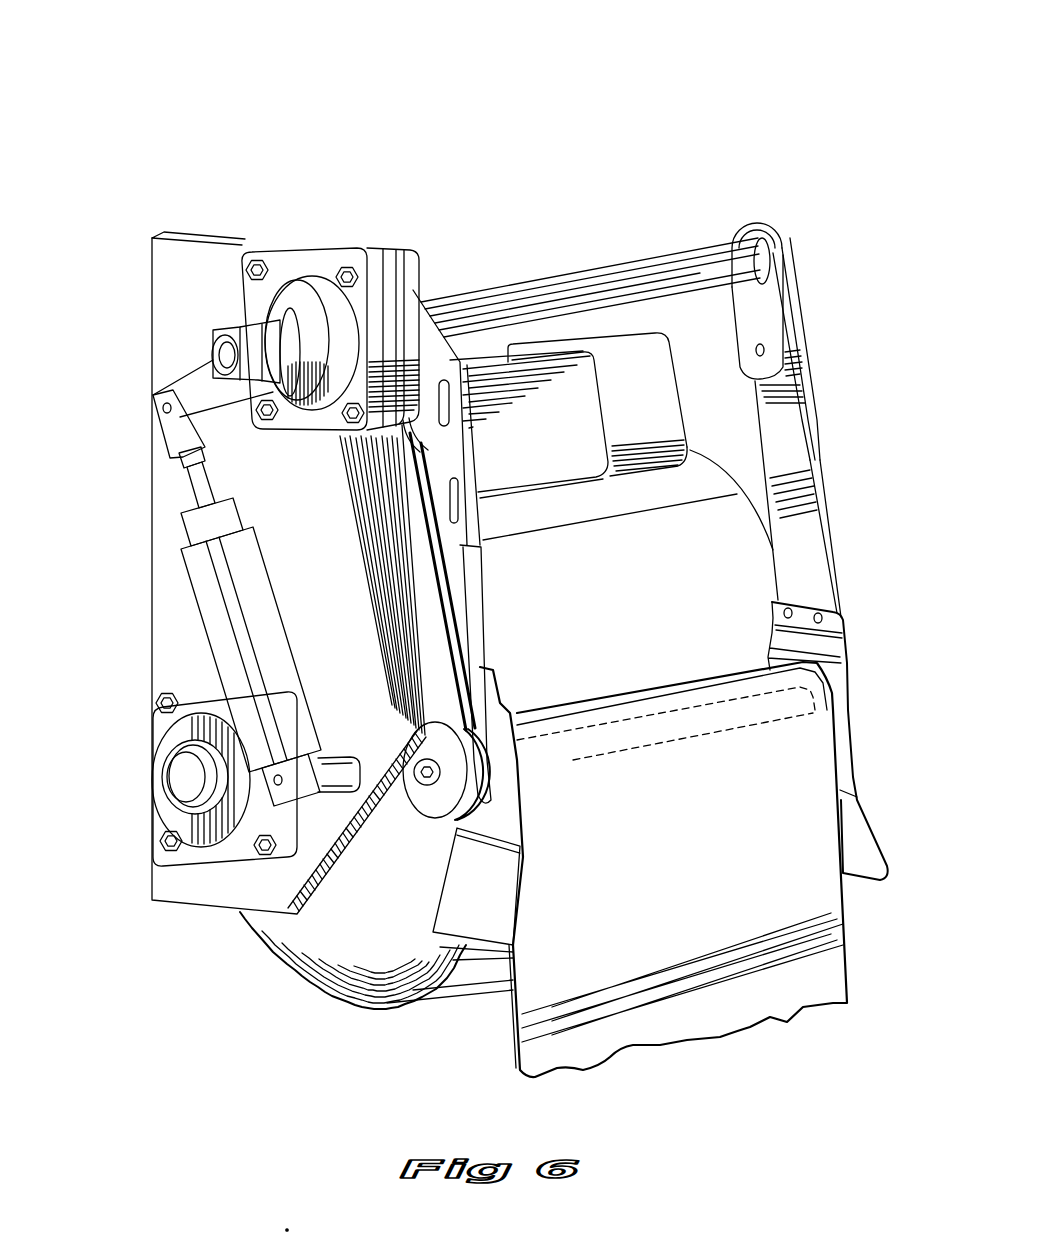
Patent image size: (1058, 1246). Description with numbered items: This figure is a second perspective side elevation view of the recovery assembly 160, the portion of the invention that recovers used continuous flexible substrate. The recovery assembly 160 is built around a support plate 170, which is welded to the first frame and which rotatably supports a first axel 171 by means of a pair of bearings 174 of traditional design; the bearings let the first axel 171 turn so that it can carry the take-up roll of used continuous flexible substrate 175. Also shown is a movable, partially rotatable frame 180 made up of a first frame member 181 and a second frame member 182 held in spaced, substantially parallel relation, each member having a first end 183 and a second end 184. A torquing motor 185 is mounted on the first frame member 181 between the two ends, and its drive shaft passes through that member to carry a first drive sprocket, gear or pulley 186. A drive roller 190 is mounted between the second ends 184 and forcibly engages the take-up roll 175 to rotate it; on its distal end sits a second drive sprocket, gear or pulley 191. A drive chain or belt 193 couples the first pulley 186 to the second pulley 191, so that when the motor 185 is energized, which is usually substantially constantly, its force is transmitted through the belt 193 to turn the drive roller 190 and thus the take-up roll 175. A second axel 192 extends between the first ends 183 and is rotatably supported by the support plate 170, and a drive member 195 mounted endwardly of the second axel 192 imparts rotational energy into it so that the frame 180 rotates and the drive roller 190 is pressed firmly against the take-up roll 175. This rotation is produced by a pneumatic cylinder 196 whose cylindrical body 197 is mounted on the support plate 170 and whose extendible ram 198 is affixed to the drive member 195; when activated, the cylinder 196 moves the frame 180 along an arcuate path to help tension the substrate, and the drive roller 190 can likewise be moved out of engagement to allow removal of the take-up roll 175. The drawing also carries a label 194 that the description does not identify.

The recovery assembly 160 is at (363, 108).
The support plate 170 is at (152, 306).
The first axel 171 is at (175, 782).
The bearings 174 is at (180, 823).
The take-up roll of used continuous flexible substrate 175 is at (777, 577).
The rotatable frame 180 is at (788, 180).
The first frame member 181 is at (457, 340).
The second frame member 182 is at (783, 430).
The first end 183 is at (433, 353).
The second end 184 is at (800, 587).
The motor 185 is at (647, 363).
The first drive sprocket, gear or pulley 186 is at (413, 443).
The drive roller 190 is at (867, 699).
The second drive sprocket, gear or pulley 191 is at (430, 807).
The second axel 192 is at (593, 277).
The drive chain or belt 193 is at (447, 633).
The gearbox flange 194 is at (372, 248).
The drive member 195 is at (203, 372).
The pneumatic cylinder 196 is at (190, 614).
The cylindrical body 197 is at (257, 627).
The extendible ram 198 is at (197, 487).